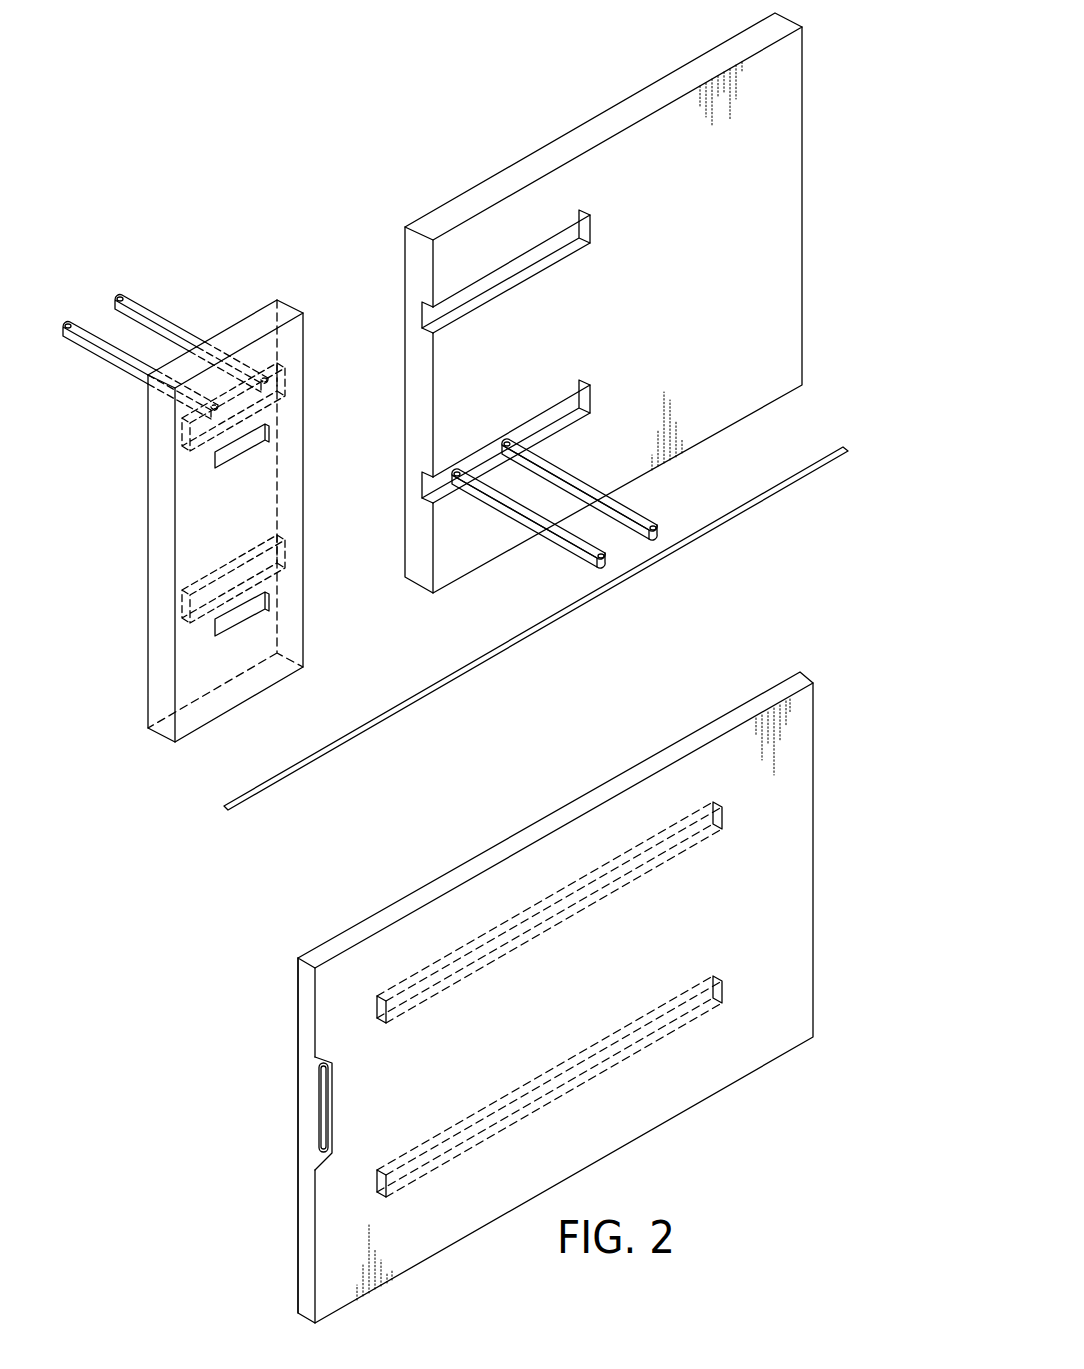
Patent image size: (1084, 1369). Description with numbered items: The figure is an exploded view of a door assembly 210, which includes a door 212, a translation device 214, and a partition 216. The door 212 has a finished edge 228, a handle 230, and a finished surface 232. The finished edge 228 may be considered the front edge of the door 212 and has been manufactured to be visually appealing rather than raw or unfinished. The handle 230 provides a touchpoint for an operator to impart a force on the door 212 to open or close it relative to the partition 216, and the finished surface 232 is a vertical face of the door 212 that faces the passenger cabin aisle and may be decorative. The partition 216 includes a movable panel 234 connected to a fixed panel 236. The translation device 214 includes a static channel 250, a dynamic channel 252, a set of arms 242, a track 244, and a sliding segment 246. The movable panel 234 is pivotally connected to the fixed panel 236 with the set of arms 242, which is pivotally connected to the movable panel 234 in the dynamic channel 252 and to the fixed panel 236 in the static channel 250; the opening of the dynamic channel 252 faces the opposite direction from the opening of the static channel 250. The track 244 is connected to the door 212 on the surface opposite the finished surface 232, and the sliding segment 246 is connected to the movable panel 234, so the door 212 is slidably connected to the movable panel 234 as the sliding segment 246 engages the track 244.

The door assembly 210 is at (270, 77).
The door 212 is at (850, 984).
The translation device 214 is at (122, 247).
The partition 216 is at (538, 620).
The finished edge 228 is at (305, 1000).
The handle 230 is at (323, 1092).
The finished surface 232 is at (800, 856).
The movable panel 234 is at (160, 542).
The fixed panel 236 is at (790, 180).
The set of arms 242 is at (623, 507).
The track 244 is at (570, 913).
The sliding segment 246 is at (229, 457).
The static channel 250 is at (532, 256).
The dynamic channel 252 is at (288, 385).